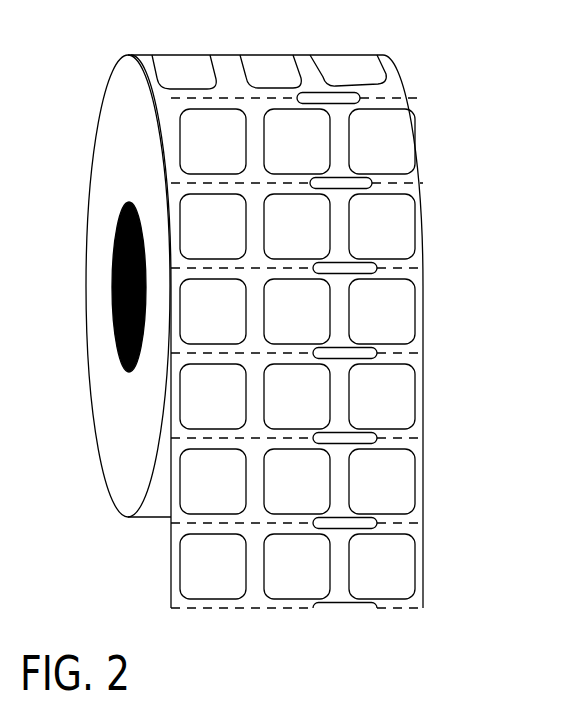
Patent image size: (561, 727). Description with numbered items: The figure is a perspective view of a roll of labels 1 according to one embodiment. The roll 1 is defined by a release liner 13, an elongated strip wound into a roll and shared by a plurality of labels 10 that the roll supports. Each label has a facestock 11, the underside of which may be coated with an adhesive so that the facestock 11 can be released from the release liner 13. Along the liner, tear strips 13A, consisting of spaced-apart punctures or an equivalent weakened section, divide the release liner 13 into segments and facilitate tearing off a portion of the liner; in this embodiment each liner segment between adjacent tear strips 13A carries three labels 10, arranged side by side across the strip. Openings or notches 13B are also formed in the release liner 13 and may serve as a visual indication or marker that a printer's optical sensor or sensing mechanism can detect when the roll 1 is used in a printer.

The roll of labels 1 is at (482, 70).
The labels 10 is at (385, 405).
The facestock 11 is at (413, 312).
The release liner 13 is at (175, 567).
The tear strips 13A is at (413, 437).
The openings or notches 13B is at (358, 444).